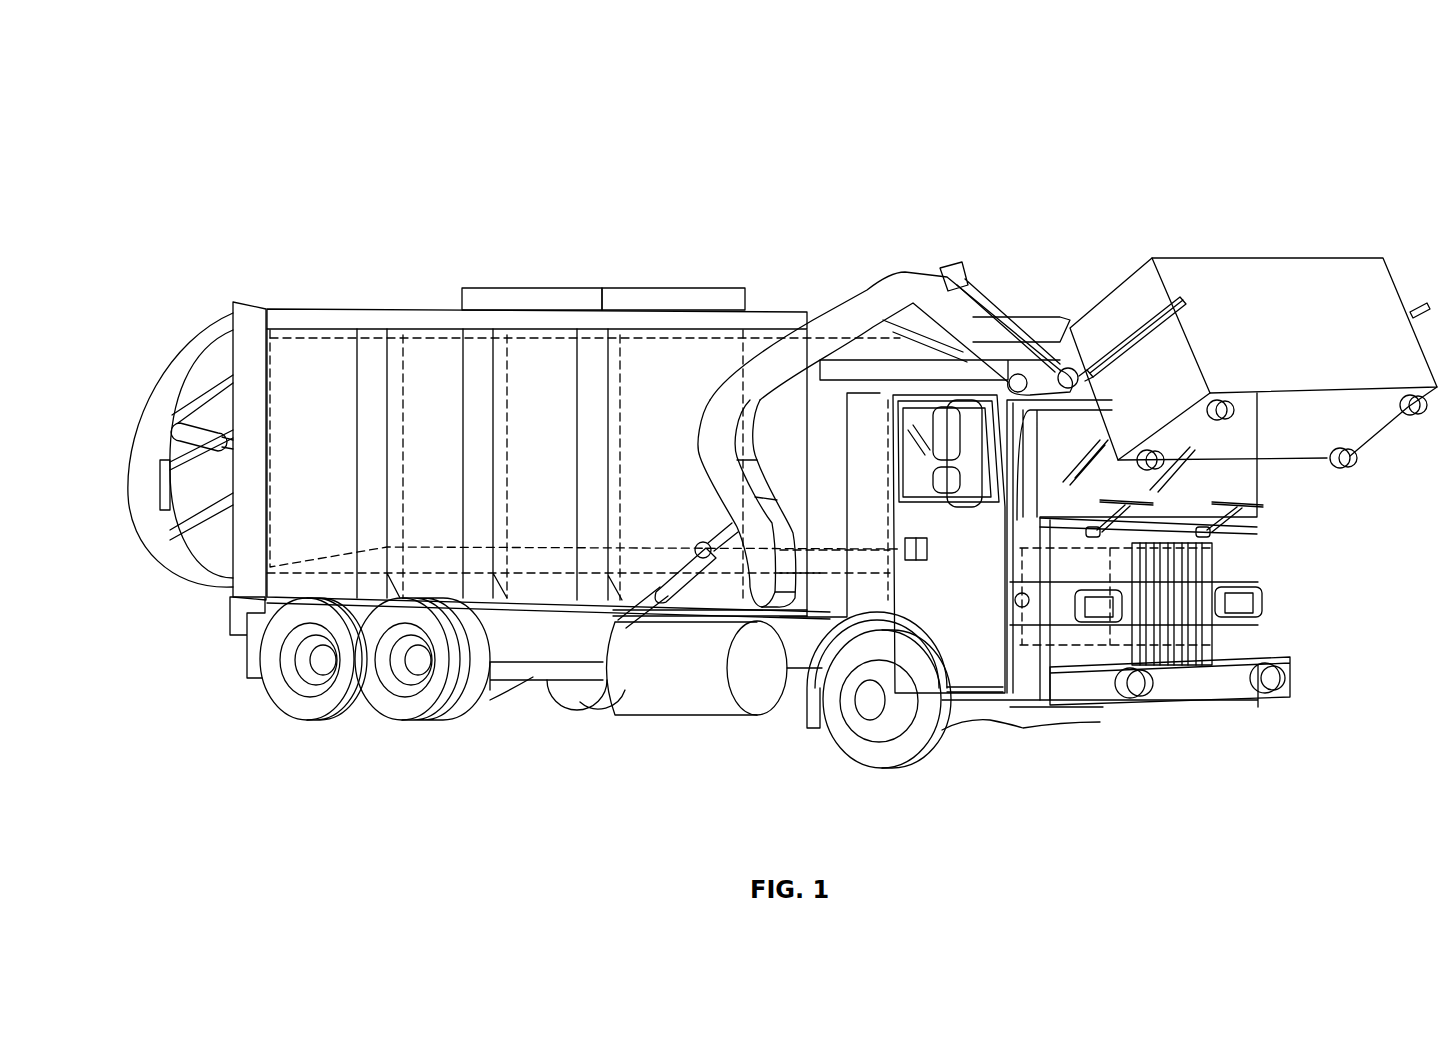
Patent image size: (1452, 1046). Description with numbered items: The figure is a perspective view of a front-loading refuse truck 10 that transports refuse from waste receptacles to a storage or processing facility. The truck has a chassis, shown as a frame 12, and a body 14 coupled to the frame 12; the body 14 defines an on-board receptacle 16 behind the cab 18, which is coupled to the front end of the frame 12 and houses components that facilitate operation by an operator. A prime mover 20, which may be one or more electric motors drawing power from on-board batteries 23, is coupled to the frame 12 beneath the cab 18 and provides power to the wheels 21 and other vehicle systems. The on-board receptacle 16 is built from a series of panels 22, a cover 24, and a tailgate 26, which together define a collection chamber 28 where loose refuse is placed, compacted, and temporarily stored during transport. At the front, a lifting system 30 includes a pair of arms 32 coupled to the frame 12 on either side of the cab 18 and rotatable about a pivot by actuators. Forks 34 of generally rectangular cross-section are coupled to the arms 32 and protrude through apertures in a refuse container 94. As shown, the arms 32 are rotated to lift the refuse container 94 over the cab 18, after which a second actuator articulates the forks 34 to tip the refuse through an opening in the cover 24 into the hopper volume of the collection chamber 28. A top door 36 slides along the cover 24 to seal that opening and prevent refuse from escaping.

The refuse truck 10 is at (1072, 128).
The frame 12 is at (547, 670).
The body 14 is at (455, 258).
The on-board receptacle 16 is at (348, 311).
The cab 18 is at (1247, 480).
The prime mover 20 is at (1057, 637).
The wheels 21 is at (297, 717).
The panels 22 is at (283, 517).
The batteries 23 is at (1183, 633).
The cover 24 is at (700, 310).
The tailgate 26 is at (145, 458).
The collection chamber 28 is at (650, 355).
The lifting system 30 is at (847, 252).
The arms 32 is at (900, 283).
The forks 34 is at (1157, 312).
The top door 36 is at (520, 288).
The refuse container 94 is at (1315, 295).